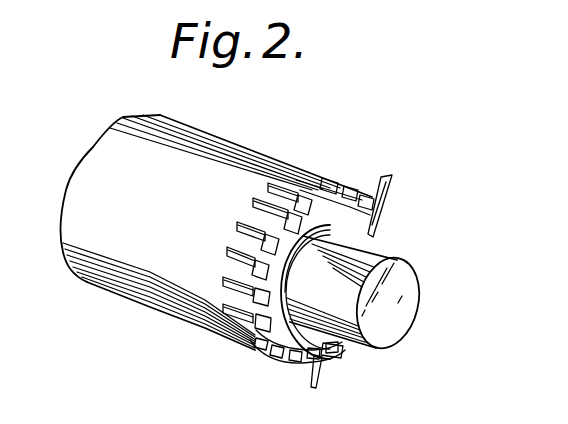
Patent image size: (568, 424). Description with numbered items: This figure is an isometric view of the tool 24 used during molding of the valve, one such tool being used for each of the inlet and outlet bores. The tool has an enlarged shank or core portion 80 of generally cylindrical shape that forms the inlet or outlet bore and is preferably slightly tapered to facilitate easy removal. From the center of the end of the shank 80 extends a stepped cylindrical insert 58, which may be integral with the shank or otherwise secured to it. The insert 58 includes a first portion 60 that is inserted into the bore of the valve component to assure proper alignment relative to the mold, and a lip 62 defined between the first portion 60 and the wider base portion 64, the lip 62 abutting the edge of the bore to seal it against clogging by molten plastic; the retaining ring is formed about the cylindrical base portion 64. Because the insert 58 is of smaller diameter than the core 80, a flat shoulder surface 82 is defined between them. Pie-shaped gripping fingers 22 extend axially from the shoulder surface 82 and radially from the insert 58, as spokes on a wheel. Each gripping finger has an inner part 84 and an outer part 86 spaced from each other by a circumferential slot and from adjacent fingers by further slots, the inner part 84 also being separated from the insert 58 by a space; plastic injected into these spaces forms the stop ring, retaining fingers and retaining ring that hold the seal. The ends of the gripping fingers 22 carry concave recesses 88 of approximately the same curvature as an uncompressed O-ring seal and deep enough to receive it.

The gripping fingers 22 is at (387, 178).
The tool 24 is at (253, 147).
The stepped cylindrical insert 58 is at (419, 264).
The first portion 60 is at (393, 318).
The lip 62 is at (275, 356).
The base portion 64 is at (308, 222).
The shank or core portion 80 is at (133, 263).
The flat shoulder surface 82 is at (250, 212).
The inner part 84 is at (247, 345).
The outer part 86 is at (230, 318).
The concave recesses 88 is at (313, 388).